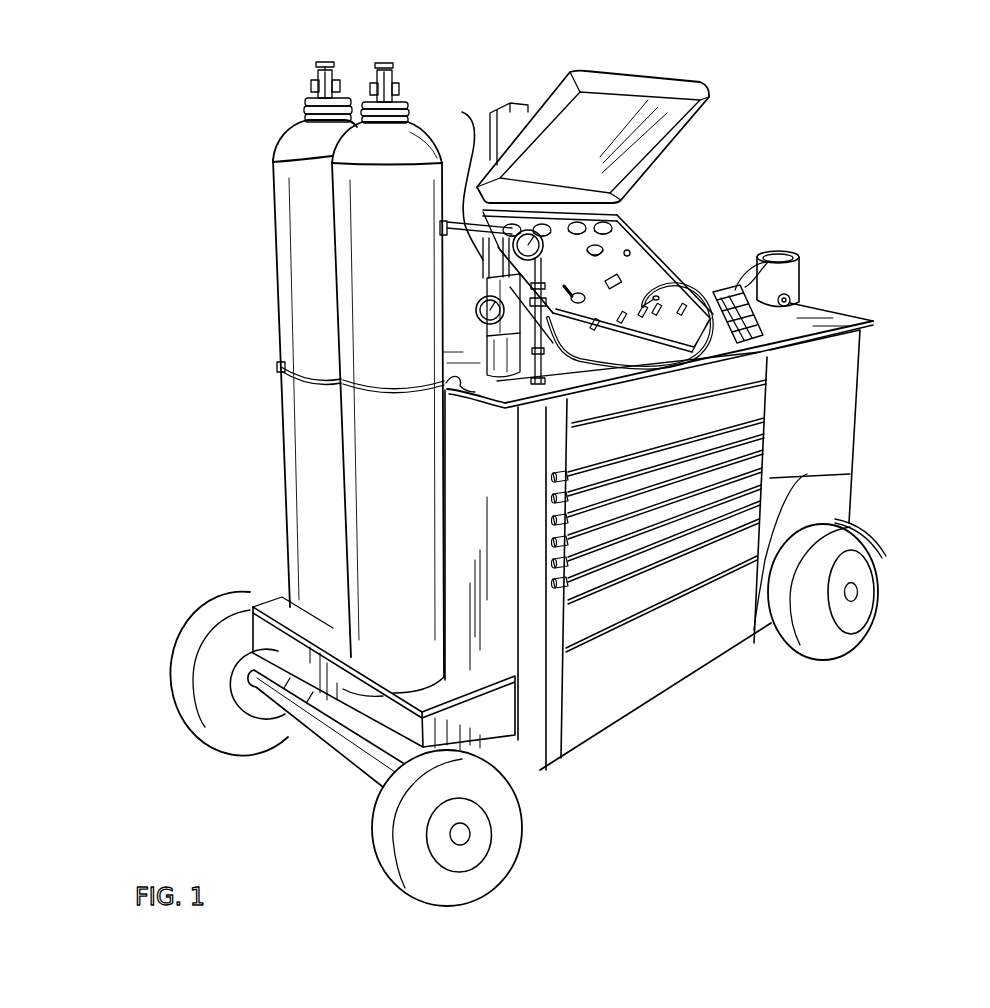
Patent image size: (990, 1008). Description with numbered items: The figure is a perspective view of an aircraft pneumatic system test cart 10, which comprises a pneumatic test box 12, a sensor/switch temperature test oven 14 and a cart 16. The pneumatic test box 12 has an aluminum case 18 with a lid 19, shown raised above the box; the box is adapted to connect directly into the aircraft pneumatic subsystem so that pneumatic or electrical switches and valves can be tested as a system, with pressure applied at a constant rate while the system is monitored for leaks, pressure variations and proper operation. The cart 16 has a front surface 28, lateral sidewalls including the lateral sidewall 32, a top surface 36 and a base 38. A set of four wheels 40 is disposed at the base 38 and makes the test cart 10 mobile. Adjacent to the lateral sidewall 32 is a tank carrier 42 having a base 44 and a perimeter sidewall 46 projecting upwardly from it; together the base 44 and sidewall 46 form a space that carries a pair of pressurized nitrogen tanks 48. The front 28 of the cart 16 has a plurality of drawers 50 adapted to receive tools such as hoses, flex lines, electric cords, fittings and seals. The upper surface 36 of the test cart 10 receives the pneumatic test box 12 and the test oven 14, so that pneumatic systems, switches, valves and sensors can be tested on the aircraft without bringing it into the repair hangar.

The aircraft pneumatic system test cart 10 is at (145, 122).
The pneumatic test box 12 is at (683, 221).
The sensor/switch temperature test oven 14 is at (800, 242).
The cart 16 is at (882, 367).
The aluminum case 18 is at (462, 112).
The lid 19 is at (680, 87).
The front surface 28 is at (830, 505).
The lateral sidewall 32 is at (543, 740).
The top surface 36 is at (843, 319).
The base 38 is at (713, 666).
The wheels 40 is at (873, 595).
The tank carrier 42 is at (275, 584).
The base 44 is at (500, 637).
The perimeter sidewall 46 is at (367, 717).
The pressurized nitrogen tanks 48 is at (312, 243).
The drawers 50 is at (745, 400).